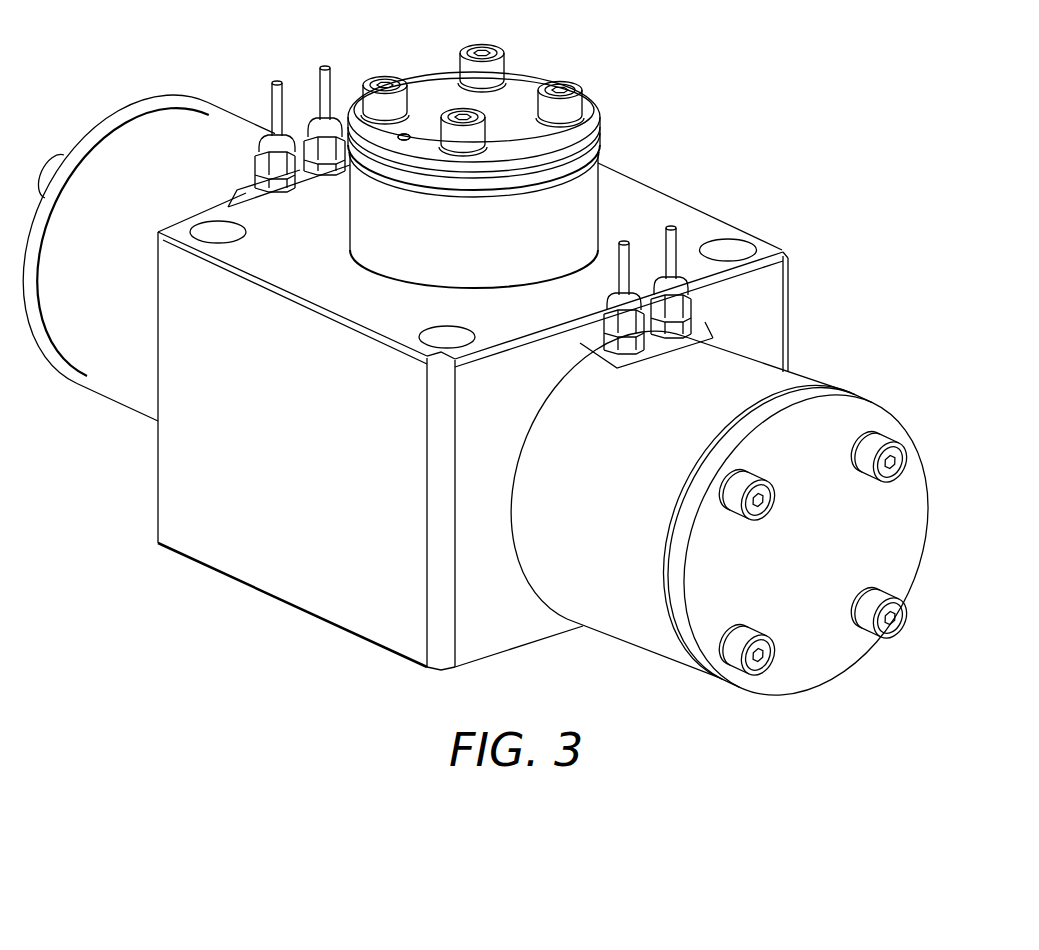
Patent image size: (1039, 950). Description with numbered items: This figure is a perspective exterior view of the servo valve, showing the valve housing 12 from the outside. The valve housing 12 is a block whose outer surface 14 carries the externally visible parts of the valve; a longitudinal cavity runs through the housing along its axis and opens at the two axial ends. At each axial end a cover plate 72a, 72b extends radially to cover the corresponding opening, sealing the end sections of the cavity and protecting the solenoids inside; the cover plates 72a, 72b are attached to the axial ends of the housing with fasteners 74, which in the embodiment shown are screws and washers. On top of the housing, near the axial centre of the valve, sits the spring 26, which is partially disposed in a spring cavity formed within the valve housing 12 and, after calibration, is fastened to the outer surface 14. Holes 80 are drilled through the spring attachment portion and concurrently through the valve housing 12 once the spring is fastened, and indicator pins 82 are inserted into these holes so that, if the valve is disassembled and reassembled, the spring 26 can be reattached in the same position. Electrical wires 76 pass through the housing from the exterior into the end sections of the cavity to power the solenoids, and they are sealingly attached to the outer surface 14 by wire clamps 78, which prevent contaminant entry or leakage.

The valve housing 12 is at (172, 488).
The outer surface 14 is at (647, 200).
The spring 26 is at (515, 100).
The cover plate 72a is at (130, 118).
The cover plate 72b is at (905, 528).
The fasteners 74 is at (877, 442).
The electrical wires 76 is at (272, 95).
The wire clamps 78 is at (322, 128).
The holes 80 is at (404, 142).
The indicator pins 82 is at (404, 134).